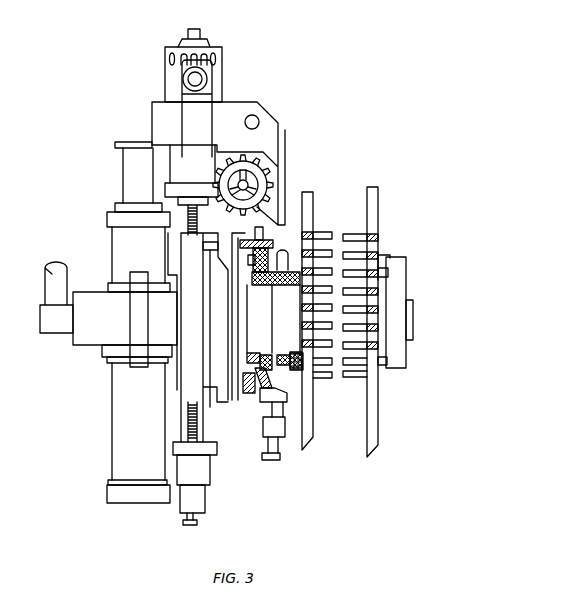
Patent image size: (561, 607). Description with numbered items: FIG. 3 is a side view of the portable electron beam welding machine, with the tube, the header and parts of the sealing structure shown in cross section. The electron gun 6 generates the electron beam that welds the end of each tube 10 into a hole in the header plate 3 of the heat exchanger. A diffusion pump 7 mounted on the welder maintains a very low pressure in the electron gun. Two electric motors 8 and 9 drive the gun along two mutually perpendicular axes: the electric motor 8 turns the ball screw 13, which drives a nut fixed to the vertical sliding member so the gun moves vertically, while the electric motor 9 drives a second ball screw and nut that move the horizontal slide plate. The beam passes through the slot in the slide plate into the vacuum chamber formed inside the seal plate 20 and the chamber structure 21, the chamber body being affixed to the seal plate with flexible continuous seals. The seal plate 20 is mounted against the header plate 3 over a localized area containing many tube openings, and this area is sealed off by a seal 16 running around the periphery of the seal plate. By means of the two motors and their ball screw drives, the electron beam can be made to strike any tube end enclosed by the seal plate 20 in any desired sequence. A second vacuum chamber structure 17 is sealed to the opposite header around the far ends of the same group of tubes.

The header plate 3 is at (304, 276).
The electron gun 6 is at (83, 333).
The diffusion pump 7 is at (122, 433).
The electric motor 8 is at (172, 76).
The electric motor 9 is at (258, 175).
The tube 10 is at (327, 277).
The ball screw 13 is at (188, 217).
The seal 16 is at (310, 288).
The second vacuum chamber structure 17 is at (392, 280).
The seal plate 20 is at (303, 362).
The chamber structure 21 is at (267, 343).